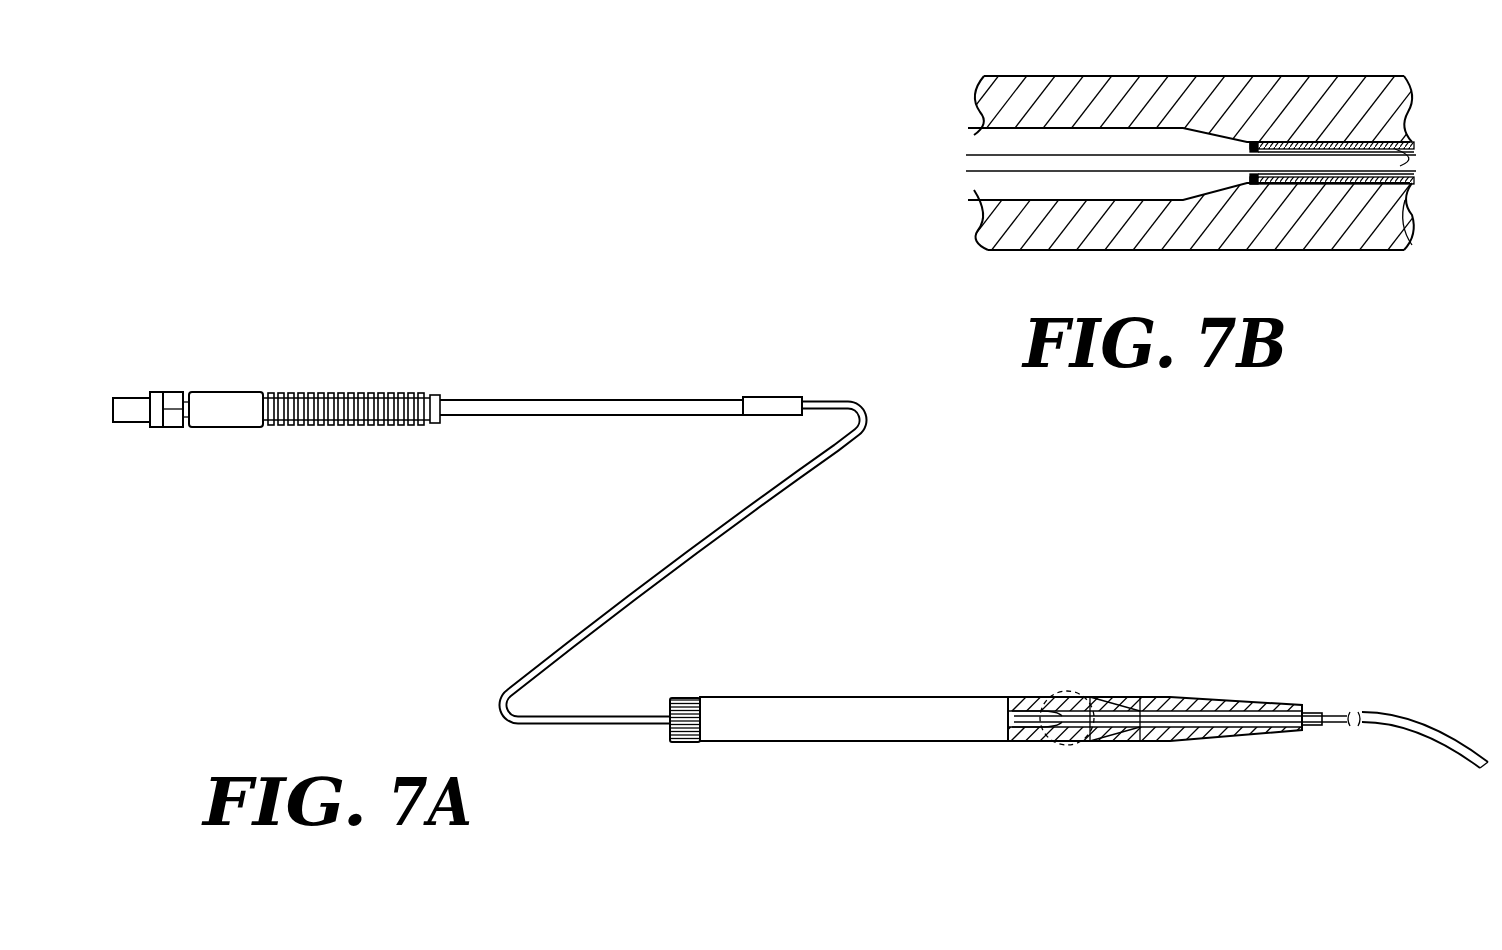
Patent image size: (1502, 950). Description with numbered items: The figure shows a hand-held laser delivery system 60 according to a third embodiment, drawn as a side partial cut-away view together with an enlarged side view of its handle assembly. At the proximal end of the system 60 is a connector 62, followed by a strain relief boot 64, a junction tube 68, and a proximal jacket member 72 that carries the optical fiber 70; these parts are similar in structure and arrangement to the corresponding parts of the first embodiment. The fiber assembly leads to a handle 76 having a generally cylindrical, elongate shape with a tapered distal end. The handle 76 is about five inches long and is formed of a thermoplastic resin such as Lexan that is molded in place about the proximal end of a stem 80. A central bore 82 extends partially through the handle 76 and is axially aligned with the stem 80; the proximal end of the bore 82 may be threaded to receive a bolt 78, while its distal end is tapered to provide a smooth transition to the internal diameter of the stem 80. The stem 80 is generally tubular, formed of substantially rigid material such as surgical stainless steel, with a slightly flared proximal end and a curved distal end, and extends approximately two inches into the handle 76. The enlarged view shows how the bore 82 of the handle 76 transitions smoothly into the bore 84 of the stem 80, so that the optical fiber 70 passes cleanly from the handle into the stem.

In FIG. 7A, the hand-held laser delivery system 60 is at (445, 342).
In FIG. 7A, the connector 62 is at (170, 400).
In FIG. 7A, the strain relief boot 64 is at (232, 402).
In FIG. 7A, the junction tube 68 is at (780, 405).
In FIG. 7A, the optical fiber 70 is at (1033, 725).
In FIG. 7B, the optical fiber 70 is at (972, 177).
In FIG. 7A, the proximal jacket member 72 is at (613, 397).
In FIG. 7A, the handle 76 is at (882, 710).
In FIG. 7B, the handle 76 is at (1155, 88).
In FIG. 7A, the bolt 78 is at (683, 737).
In FIG. 7A, the stem 80 is at (1413, 718).
In FIG. 7B, the stem 80 is at (1408, 226).
In FIG. 7B, the central bore 82 is at (1093, 178).
In FIG. 7B, the bore 84 is at (1418, 152).